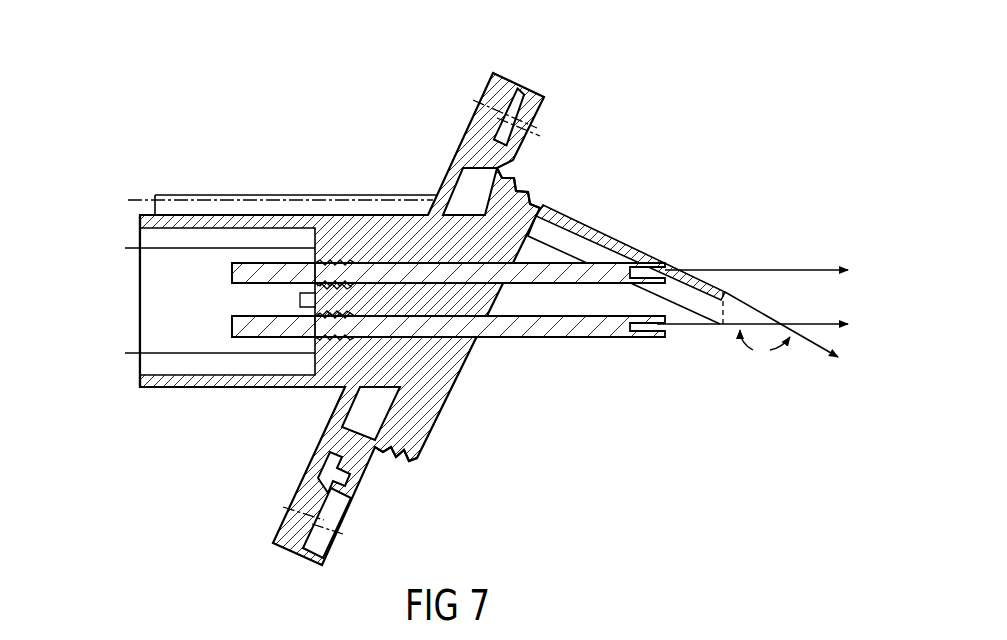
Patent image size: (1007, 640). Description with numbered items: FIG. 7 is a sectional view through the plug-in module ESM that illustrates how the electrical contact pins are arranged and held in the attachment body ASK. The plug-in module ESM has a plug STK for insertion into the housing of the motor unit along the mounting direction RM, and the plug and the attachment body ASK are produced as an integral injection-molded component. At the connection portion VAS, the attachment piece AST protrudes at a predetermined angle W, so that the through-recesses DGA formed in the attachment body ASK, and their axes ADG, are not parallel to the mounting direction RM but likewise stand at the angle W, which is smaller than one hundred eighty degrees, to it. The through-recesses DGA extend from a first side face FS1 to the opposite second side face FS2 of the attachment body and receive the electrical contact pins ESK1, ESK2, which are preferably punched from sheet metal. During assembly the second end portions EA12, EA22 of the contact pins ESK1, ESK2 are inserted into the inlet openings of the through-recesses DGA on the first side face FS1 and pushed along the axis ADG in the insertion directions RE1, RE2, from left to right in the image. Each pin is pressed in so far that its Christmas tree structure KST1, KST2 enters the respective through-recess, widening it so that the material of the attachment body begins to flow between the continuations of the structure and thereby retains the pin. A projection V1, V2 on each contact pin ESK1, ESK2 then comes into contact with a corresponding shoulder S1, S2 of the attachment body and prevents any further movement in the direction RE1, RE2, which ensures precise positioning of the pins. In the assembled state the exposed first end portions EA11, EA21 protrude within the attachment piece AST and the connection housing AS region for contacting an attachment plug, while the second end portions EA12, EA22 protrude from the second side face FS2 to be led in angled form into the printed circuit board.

The connection portion VAS is at (523, 80).
The first end portion EA11 is at (238, 258).
The electrical contact pin ESK1 is at (268, 262).
The first side face FS1 is at (312, 256).
The projection V1 is at (322, 266).
The shoulder S1 is at (338, 268).
The Christmas tree structure KST1 is at (402, 273).
The through-recesses DGA is at (541, 210).
The second end portion EA12 is at (612, 259).
The plug STK is at (684, 247).
The axis of the through-recesses ADG is at (752, 282).
The insertion direction RE1 is at (213, 273).
The insertion direction RE2 is at (213, 328).
The connection housing AS is at (148, 342).
The attachment piece AST is at (150, 380).
The first end portion EA21 is at (235, 343).
The electrical contact pin ESK2 is at (265, 342).
The projection V2 is at (315, 388).
The shoulder S2 is at (323, 378).
The Christmas tree structure KST2 is at (347, 338).
The second side face FS2 is at (450, 405).
The attachment body ASK is at (462, 490).
The second end portion EA22 is at (617, 340).
The plug-in module ESM is at (596, 438).
The angle W is at (765, 349).
The mounting direction RM is at (781, 338).